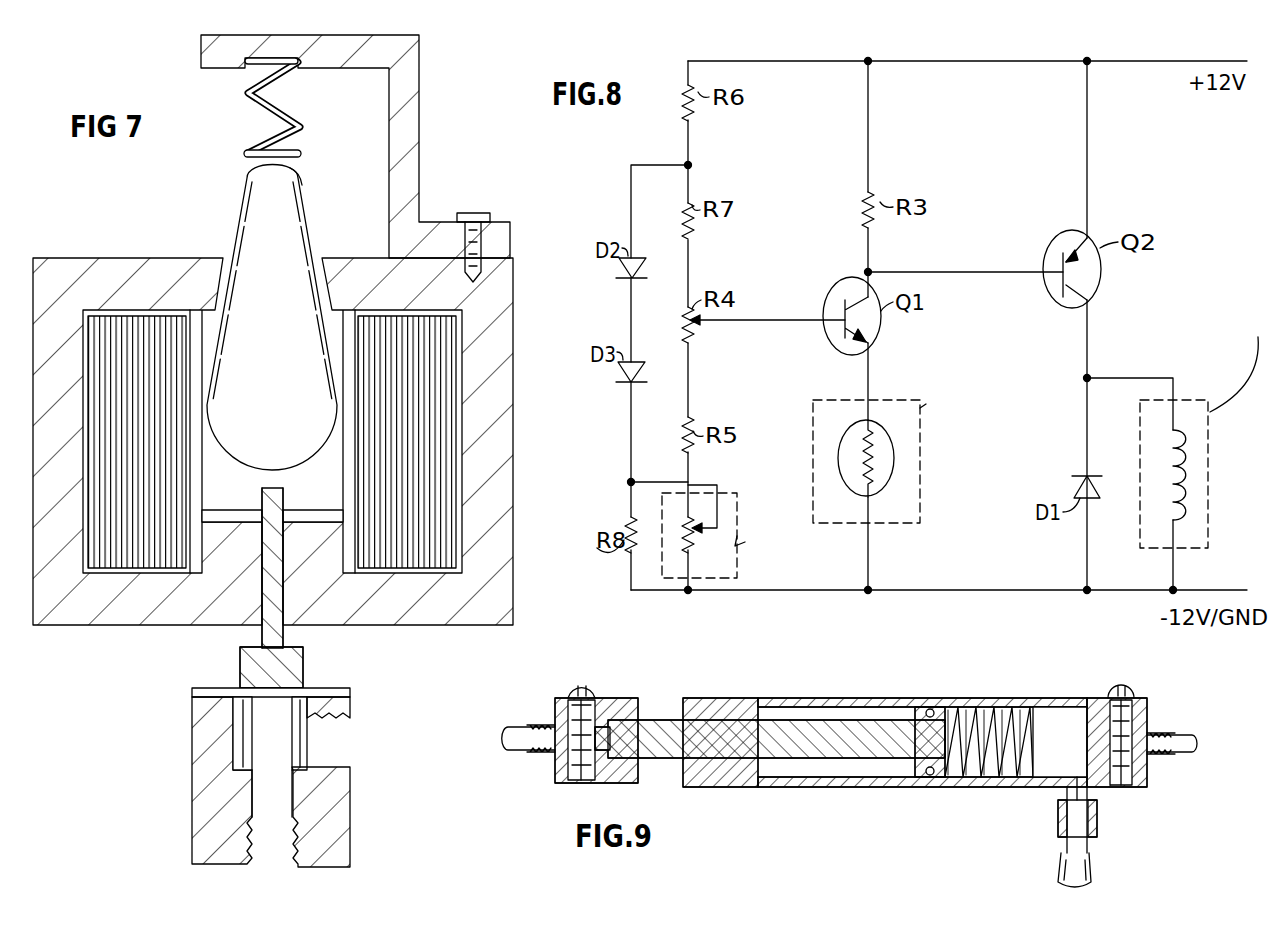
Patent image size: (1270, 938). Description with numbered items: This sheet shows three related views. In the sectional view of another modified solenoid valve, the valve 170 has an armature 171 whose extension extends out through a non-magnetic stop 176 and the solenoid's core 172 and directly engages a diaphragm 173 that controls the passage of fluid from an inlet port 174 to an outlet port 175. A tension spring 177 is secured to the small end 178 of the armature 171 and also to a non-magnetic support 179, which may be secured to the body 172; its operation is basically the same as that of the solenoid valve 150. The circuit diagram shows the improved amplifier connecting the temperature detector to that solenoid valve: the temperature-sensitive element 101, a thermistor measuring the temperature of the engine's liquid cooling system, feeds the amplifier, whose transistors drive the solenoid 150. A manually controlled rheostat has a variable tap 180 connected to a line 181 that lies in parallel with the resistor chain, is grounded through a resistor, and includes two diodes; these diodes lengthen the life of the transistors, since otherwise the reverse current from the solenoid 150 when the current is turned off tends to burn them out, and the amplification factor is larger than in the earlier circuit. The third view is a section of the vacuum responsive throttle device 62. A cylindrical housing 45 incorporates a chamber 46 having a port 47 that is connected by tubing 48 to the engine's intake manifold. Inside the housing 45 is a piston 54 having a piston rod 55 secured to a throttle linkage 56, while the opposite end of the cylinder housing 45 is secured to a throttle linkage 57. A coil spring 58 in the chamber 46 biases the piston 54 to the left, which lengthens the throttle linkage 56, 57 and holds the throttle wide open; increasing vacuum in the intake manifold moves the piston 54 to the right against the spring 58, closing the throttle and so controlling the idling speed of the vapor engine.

In FIG. 7, the valve 170 is at (210, 246).
In FIG. 7, the armature 171 is at (291, 444).
In FIG. 7, the core 172 is at (363, 612).
In FIG. 7, the diaphragm 173 is at (333, 688).
In FIG. 7, the inlet port 174 is at (273, 856).
In FIG. 7, the outlet port 175 is at (308, 741).
In FIG. 7, the non-magnetic stop 176 is at (250, 519).
In FIG. 7, the tension spring 177 is at (298, 118).
In FIG. 7, the small end 178 is at (299, 158).
In FIG. 7, the non-magnetic support 179 is at (407, 72).
In FIG. 8, the temperature-sensitive element 101 is at (884, 406).
In FIG. 8, the solenoid 150 is at (1200, 400).
In FIG. 8, the variable tap 180 is at (708, 500).
In FIG. 8, the line 181 is at (632, 420).
In FIG. 9, the cylindrical housing 45 is at (835, 788).
In FIG. 9, the chamber 46 is at (1063, 728).
In FIG. 9, the port 47 is at (1077, 790).
In FIG. 9, the tubing 48 is at (1092, 862).
In FIG. 9, the piston 54 is at (990, 707).
In FIG. 9, the piston rod 55 is at (805, 760).
In FIG. 9, the throttle linkage 56 is at (510, 746).
In FIG. 9, the throttle linkage 57 is at (1180, 735).
In FIG. 9, the coil spring 58 is at (995, 788).
In FIG. 9, the actuator assembly 62 is at (864, 761).